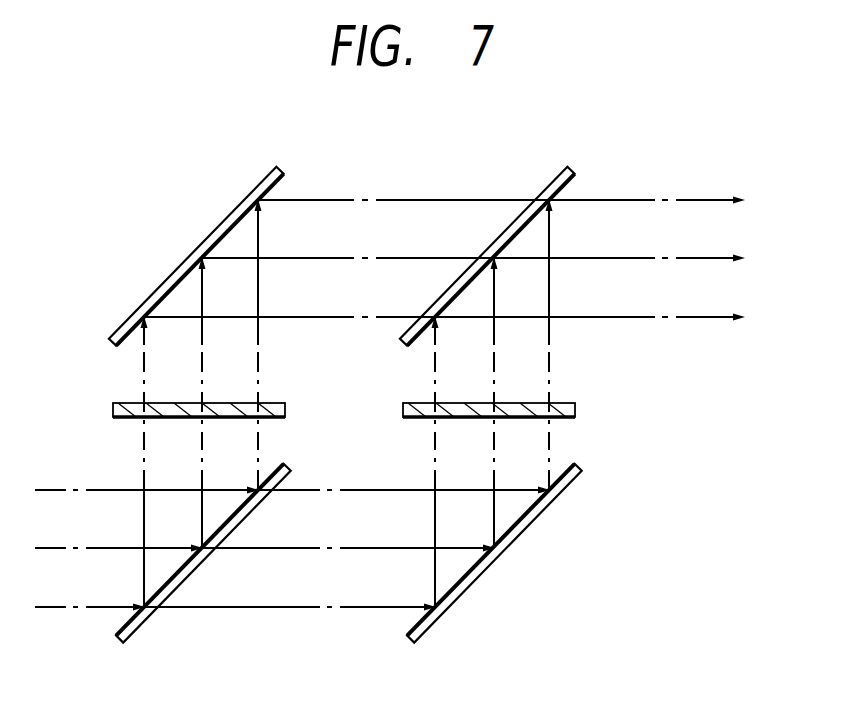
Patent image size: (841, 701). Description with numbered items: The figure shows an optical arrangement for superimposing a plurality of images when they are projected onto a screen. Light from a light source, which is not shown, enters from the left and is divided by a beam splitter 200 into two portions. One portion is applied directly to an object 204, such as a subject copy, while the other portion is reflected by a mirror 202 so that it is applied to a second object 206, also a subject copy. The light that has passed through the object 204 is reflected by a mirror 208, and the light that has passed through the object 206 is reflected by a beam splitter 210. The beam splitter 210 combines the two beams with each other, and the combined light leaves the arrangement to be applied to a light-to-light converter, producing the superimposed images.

The beam splitter 200 is at (287, 466).
The mirror 202 is at (578, 466).
The object 204 is at (278, 402).
The object 206 is at (570, 402).
The mirror 208 is at (284, 169).
The beam splitter 210 is at (574, 169).